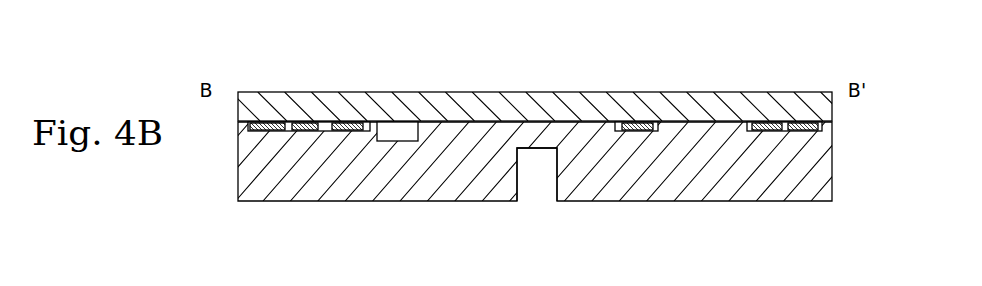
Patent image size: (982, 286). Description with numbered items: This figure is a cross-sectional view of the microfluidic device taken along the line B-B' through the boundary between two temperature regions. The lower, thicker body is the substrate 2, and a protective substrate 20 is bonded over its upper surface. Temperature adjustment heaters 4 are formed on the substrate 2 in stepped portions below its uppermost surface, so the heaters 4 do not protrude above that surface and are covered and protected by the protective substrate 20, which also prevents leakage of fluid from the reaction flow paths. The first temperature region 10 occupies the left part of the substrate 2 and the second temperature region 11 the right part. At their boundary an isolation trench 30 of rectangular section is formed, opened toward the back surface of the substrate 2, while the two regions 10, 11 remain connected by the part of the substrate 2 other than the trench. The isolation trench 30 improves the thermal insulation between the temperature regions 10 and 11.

The substrate 2 is at (832, 177).
The temperature adjustment heater 4 is at (353, 122).
The first temperature region 10 is at (384, 183).
The second temperature region 11 is at (705, 190).
The protective substrate 20 is at (832, 108).
The isolation trench 30 is at (533, 185).